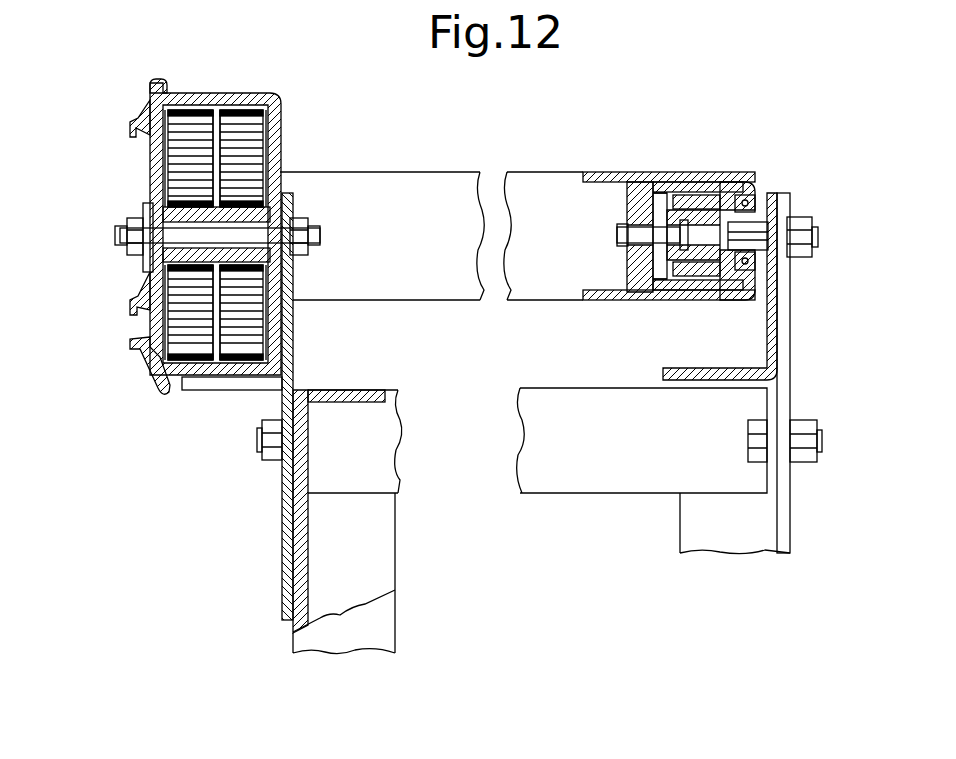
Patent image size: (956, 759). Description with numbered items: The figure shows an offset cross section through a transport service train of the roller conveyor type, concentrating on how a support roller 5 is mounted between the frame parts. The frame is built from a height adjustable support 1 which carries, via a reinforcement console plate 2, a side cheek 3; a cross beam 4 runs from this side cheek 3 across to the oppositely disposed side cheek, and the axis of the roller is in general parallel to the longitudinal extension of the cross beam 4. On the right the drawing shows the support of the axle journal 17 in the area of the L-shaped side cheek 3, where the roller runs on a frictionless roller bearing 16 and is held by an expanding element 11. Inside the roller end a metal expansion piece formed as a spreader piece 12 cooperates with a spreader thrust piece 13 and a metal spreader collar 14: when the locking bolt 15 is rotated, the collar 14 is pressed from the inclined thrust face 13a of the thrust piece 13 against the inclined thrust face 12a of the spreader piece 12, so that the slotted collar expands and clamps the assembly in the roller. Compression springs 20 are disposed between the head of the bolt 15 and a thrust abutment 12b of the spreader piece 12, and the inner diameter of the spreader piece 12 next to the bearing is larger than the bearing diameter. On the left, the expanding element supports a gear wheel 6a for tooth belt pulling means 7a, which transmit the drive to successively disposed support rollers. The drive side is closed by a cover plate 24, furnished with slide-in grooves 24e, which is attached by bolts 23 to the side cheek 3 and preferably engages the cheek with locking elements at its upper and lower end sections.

The height adjustable support 1 is at (318, 567).
The reinforcement console plate 2 is at (285, 522).
The side cheek 3 is at (220, 385).
The cross beam 4 is at (458, 477).
The support roller 5 is at (538, 190).
The gear wheel 6a is at (273, 137).
The tooth belt pulling means 7a is at (250, 113).
The expanding element 11 is at (765, 180).
The spreader piece 12 is at (753, 170).
The inclined thrust face 12a is at (720, 172).
The thrust abutment 12b is at (680, 253).
The spreader thrust piece 13 is at (612, 172).
The inclined thrust face 13a is at (640, 172).
The spreader collar 14 is at (680, 172).
The locking bolt 15 is at (617, 232).
The roller bearing 16 is at (747, 205).
The axle journal 17 is at (748, 235).
The compression spring 20 is at (697, 253).
The bolt 23 is at (310, 222).
The cover plate 24 is at (152, 320).
The slide-in groove 24e is at (142, 148).